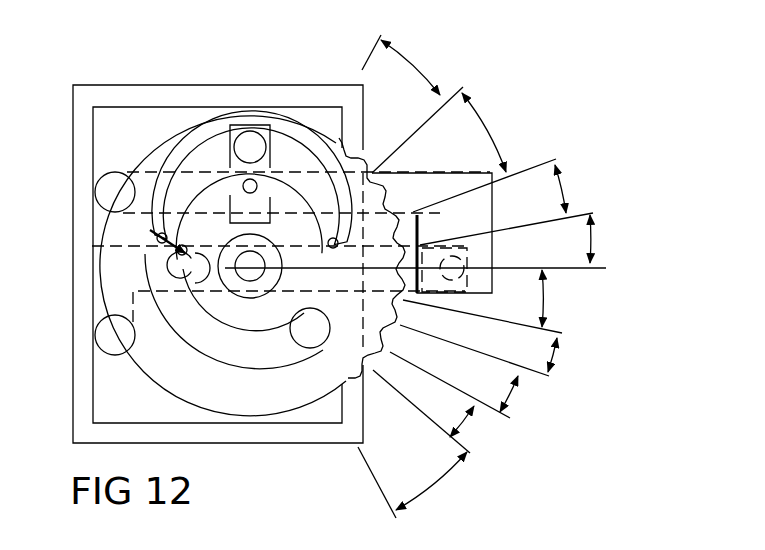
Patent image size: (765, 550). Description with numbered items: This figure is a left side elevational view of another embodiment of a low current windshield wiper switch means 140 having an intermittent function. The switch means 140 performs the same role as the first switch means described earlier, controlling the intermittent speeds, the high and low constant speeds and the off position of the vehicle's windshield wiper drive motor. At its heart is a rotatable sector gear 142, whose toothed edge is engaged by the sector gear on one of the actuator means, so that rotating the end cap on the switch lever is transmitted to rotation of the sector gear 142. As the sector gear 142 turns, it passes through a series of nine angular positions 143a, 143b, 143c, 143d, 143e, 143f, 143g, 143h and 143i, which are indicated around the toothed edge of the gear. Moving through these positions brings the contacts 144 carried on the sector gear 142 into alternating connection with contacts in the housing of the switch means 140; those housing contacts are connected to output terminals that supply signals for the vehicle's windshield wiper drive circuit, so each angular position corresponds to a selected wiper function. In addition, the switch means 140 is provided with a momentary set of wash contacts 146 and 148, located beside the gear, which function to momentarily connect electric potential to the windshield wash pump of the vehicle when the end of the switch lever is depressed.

The windshield wiper switch means 140 is at (210, 74).
The sector gear 142 is at (303, 143).
The contacts 144 is at (100, 86).
The wash contact 146 is at (437, 187).
The wash contact 148 is at (489, 293).
The angular position 143a is at (419, 72).
The angular position 143b is at (478, 114).
The angular position 143c is at (565, 189).
The angular position 143d is at (594, 239).
The angular position 143e is at (540, 305).
The angular position 143f is at (556, 356).
The angular position 143g is at (517, 397).
The angular position 143h is at (470, 421).
The angular position 143i is at (446, 468).